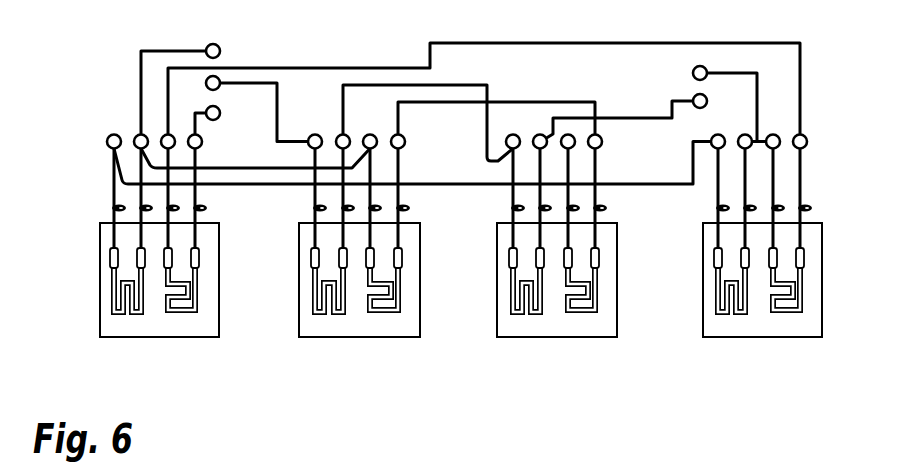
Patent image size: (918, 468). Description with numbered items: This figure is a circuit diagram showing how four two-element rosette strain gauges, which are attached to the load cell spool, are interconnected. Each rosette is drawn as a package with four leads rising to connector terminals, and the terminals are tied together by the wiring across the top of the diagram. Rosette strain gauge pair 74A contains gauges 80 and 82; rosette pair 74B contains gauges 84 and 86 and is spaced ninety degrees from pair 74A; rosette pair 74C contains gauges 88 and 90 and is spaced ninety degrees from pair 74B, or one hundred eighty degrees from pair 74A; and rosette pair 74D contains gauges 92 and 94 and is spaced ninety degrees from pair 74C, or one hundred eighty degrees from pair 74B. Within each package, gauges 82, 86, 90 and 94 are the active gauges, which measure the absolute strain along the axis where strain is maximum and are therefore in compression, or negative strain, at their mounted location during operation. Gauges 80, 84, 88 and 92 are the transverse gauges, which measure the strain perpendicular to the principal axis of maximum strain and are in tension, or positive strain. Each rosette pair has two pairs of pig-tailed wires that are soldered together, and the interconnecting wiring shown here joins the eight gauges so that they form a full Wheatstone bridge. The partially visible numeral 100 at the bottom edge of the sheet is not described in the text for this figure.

The rosette strain gauge pair 74A is at (766, 331).
The rosette strain gauge pair 74B is at (565, 331).
The rosette strain gauge pair 74C is at (362, 331).
The rosette strain gauge pair 74D is at (156, 331).
The transverse gauge 80 is at (803, 316).
The active gauge 82 is at (715, 313).
The transverse gauge 84 is at (599, 316).
The active gauge 86 is at (510, 313).
The transverse gauge 88 is at (396, 316).
The active gauge 90 is at (312, 313).
The transverse gauge 92 is at (193, 316).
The active gauge 94 is at (112, 314).
The sheet numeral (partially visible) 100 is at (355, 463).